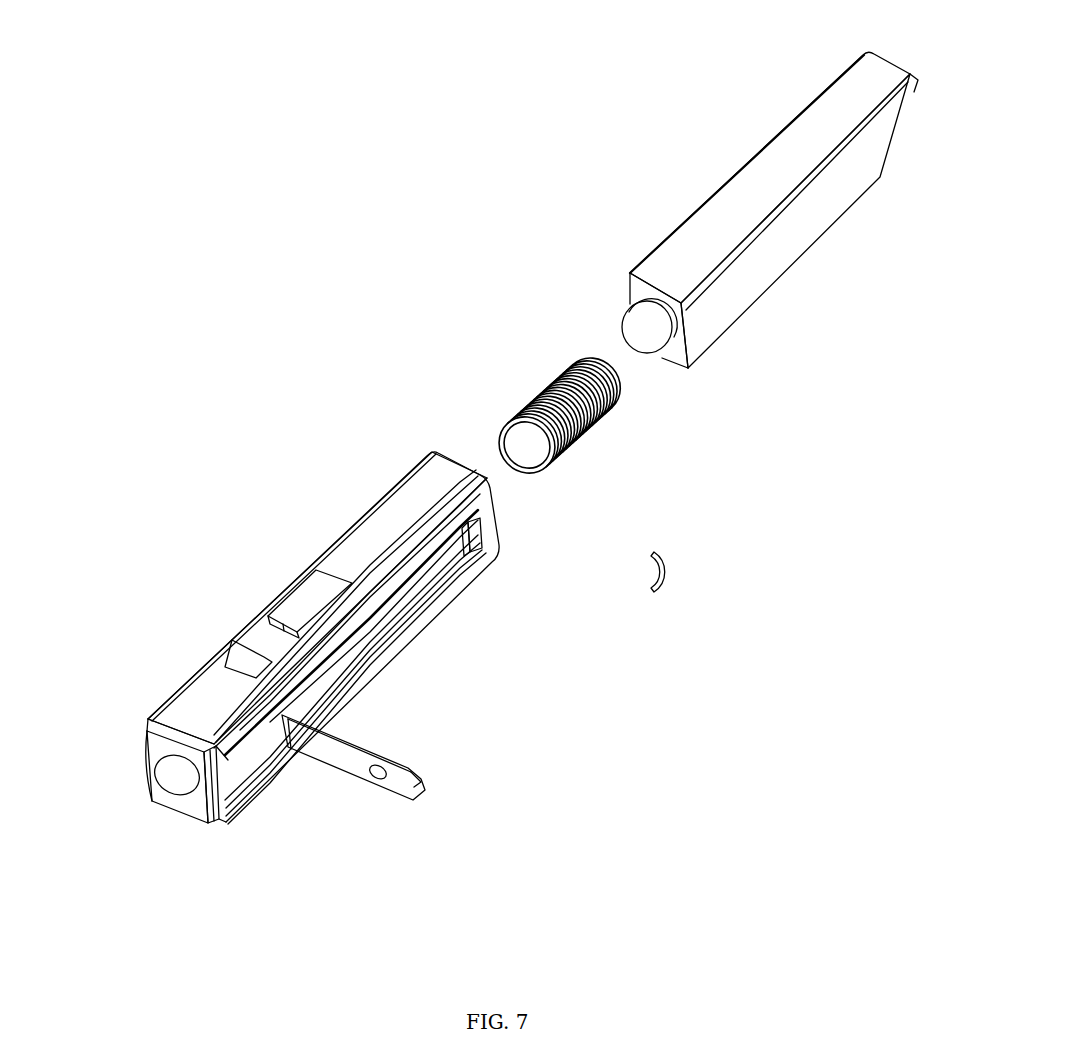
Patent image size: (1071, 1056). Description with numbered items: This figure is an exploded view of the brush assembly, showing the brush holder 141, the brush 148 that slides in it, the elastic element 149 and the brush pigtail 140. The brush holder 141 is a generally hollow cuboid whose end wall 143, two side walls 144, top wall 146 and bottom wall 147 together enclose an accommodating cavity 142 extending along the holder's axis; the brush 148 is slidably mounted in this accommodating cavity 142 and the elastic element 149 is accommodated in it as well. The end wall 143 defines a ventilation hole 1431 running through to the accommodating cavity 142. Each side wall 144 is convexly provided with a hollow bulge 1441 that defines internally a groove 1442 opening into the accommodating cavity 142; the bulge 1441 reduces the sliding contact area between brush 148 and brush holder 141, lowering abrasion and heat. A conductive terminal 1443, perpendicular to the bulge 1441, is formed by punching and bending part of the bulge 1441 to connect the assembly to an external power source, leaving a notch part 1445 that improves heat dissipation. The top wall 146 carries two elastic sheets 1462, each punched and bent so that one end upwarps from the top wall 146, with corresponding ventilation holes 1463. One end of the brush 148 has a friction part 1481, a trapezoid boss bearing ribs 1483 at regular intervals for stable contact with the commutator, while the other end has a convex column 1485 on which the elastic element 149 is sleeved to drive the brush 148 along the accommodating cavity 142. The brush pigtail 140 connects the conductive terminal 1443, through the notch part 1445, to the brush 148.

The brush pigtail 140 is at (668, 573).
The brush holder 141 is at (246, 484).
The accommodating cavity 142 is at (462, 450).
The end wall 143 is at (178, 802).
The side wall 144 is at (222, 822).
The top wall 146 is at (190, 700).
The bottom wall 147 is at (389, 688).
The brush 148 is at (680, 142).
The elastic element 149 is at (590, 437).
The ventilation hole 1431 is at (172, 782).
The hollow bulge 1441 is at (147, 743).
The groove 1442 is at (197, 812).
The conductive terminal 1443 is at (425, 792).
The notch part 1445 is at (425, 613).
The elastic sheet 1462 is at (308, 598).
The ventilation hole 1463 is at (265, 613).
The friction part 1481 is at (887, 133).
The rib 1483 is at (915, 78).
The convex column 1485 is at (657, 348).